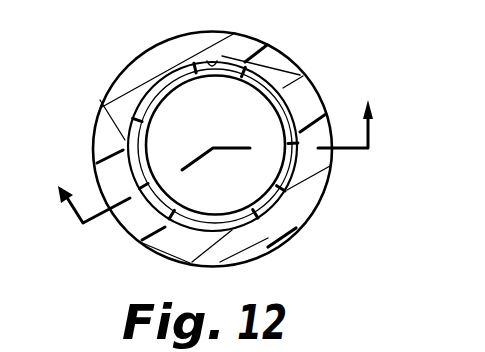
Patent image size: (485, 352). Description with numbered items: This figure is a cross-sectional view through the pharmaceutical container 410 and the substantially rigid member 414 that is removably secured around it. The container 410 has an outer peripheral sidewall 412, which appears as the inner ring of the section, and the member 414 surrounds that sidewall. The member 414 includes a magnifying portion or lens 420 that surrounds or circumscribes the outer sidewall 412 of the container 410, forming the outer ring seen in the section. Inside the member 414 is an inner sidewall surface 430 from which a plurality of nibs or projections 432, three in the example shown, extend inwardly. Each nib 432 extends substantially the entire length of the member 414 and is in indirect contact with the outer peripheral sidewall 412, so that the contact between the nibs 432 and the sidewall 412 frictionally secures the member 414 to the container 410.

The pharmaceutical container 410 is at (153, 97).
The outer peripheral sidewall 412 is at (118, 138).
The substantially rigid member 414 is at (92, 82).
The magnifying portion or lens 420 is at (263, 241).
The inner sidewall surface 430 is at (283, 90).
The nibs or projections 432 is at (213, 63).